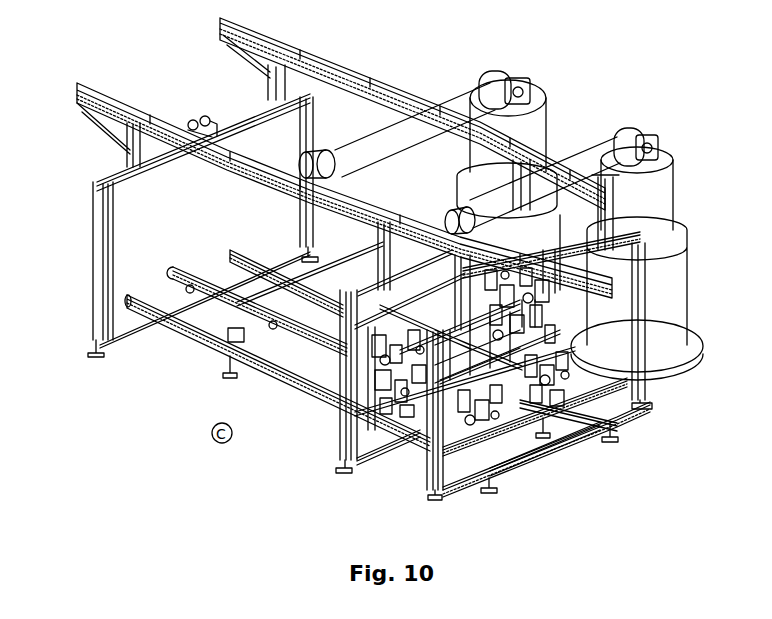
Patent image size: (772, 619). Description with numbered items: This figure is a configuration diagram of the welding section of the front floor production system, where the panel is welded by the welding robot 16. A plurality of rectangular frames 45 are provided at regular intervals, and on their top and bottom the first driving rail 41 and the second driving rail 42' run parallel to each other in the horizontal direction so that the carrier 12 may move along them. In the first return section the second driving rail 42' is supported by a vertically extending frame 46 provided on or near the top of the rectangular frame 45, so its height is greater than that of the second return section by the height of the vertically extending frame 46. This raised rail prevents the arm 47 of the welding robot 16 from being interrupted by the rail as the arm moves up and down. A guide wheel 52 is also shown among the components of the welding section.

The carrier 12 is at (633, 380).
The welding robot 16 is at (547, 130).
The first driving rail 41 is at (173, 330).
The second driving rail 42' is at (344, 158).
The rectangular frame 45 is at (100, 275).
The vertically extending frame 46 is at (120, 143).
The arm 47 is at (455, 98).
The guide wheel 52 is at (207, 117).